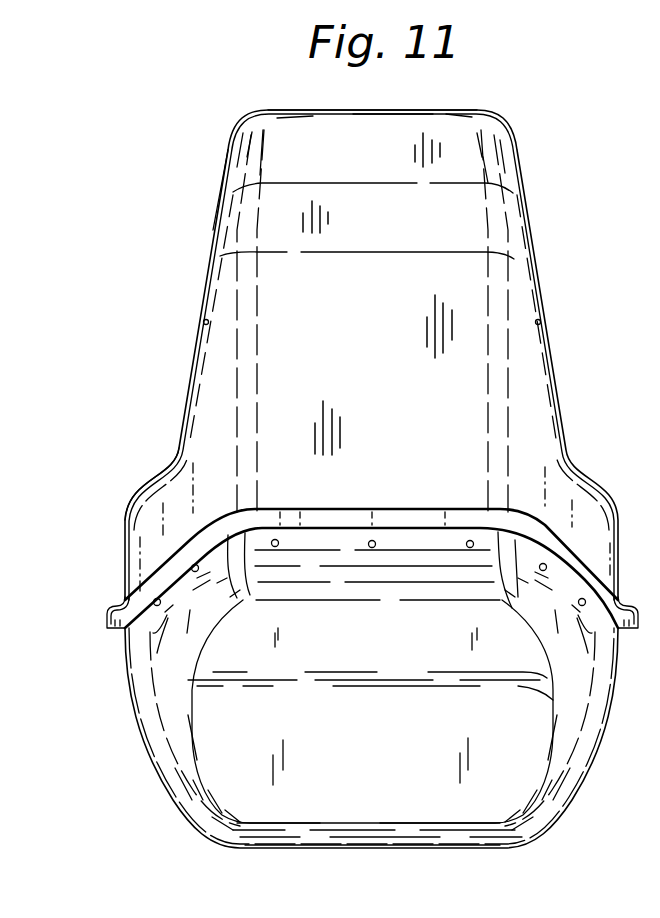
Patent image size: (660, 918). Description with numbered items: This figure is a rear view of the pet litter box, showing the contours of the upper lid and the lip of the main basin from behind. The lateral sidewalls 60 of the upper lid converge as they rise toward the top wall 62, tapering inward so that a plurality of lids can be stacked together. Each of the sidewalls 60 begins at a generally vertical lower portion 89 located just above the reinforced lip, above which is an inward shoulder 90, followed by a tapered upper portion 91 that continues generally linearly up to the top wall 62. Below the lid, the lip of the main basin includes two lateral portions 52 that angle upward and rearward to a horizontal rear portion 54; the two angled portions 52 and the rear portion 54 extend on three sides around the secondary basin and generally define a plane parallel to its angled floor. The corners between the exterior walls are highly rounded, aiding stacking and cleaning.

The lateral portions 52 is at (565, 547).
The horizontal rear portion 54 is at (427, 511).
The lateral sidewalls 60 is at (193, 343).
The top wall 62 is at (312, 110).
The vertical lower portion 89 is at (125, 538).
The inward shoulder 90 is at (150, 483).
The tapered upper portion 91 is at (222, 192).